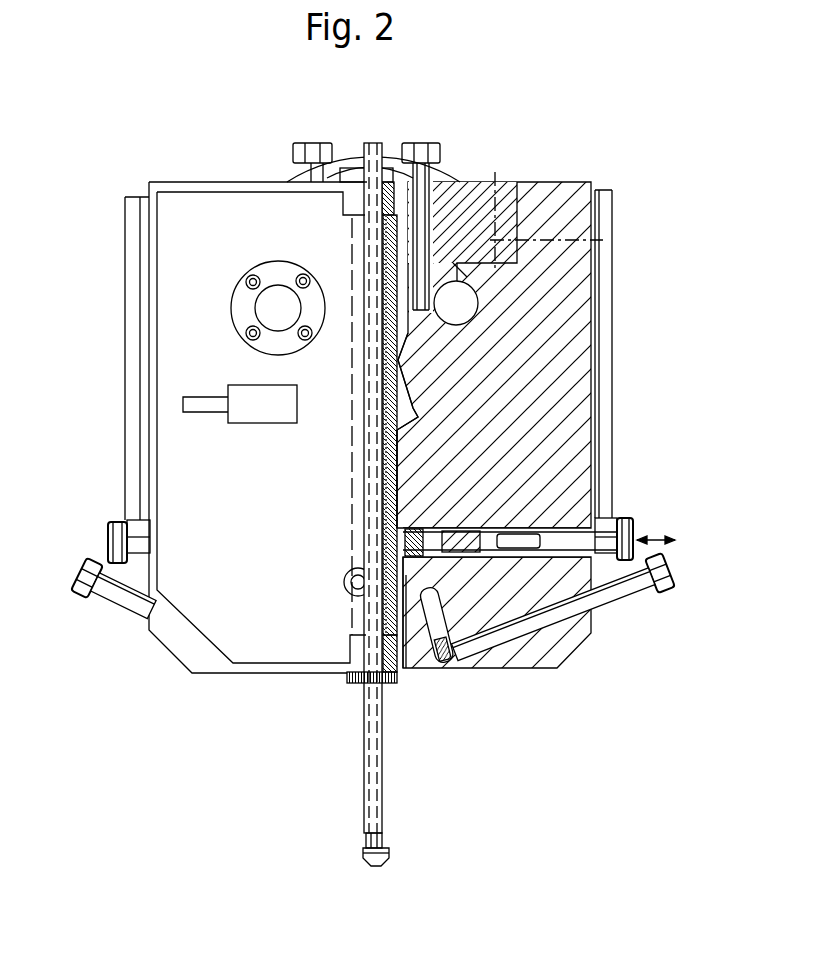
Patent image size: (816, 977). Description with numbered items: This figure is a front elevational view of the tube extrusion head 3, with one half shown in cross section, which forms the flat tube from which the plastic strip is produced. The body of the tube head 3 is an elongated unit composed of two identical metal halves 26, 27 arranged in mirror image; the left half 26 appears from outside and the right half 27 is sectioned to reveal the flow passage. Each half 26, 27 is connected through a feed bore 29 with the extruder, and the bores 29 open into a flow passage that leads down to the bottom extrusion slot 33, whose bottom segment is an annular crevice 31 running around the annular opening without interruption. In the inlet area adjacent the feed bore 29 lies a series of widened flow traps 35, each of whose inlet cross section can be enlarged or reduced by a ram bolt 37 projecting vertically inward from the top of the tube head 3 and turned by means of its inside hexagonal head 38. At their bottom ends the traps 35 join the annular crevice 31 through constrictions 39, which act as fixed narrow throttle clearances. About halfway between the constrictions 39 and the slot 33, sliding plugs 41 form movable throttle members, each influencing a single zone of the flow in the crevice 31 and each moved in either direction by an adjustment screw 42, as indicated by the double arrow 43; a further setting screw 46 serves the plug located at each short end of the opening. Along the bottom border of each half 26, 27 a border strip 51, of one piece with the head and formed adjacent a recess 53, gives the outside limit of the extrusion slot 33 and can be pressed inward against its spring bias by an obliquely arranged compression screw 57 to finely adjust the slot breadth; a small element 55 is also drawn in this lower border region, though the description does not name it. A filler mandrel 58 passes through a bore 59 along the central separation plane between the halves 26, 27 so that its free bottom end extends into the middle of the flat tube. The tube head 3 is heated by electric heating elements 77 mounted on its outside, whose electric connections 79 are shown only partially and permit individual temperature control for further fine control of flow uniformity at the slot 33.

The tube extrusion head 3 is at (622, 282).
The half of tube head 26 is at (180, 635).
The half of tube head 27 is at (557, 283).
The feed bore 29 is at (265, 305).
The annular crevice 31 is at (402, 492).
The extrusion slot 33 is at (403, 680).
The flow trap 35 is at (402, 363).
The ram bolt 37 is at (305, 176).
The inside hexagonal head 38 is at (410, 150).
The constriction 39 is at (418, 410).
The sliding plug 41 is at (393, 543).
The adjustment screw 42 is at (140, 540).
The double arrow 43 is at (655, 537).
The setting screw 46 is at (345, 580).
The border strip 51 is at (411, 670).
The recess 53 is at (517, 668).
The pin 55 is at (430, 672).
The compression screw 57 is at (112, 588).
The filler mandrel 58 is at (385, 797).
The bore 59 is at (393, 450).
The electric heating element 77 is at (133, 304).
The electric connection 79 is at (256, 414).